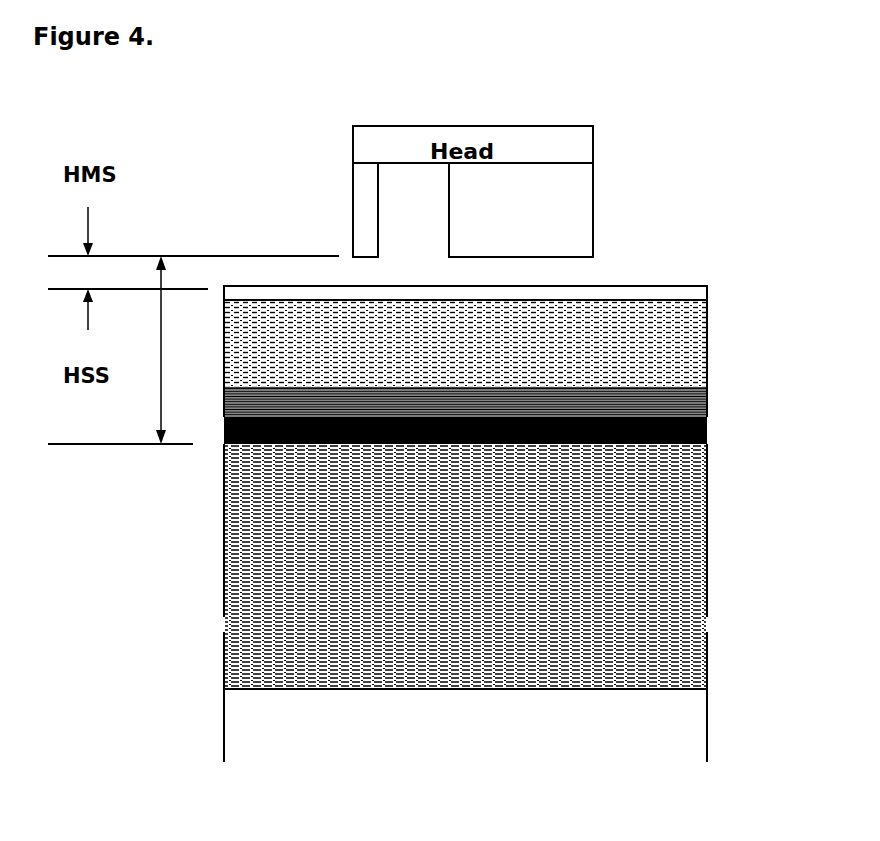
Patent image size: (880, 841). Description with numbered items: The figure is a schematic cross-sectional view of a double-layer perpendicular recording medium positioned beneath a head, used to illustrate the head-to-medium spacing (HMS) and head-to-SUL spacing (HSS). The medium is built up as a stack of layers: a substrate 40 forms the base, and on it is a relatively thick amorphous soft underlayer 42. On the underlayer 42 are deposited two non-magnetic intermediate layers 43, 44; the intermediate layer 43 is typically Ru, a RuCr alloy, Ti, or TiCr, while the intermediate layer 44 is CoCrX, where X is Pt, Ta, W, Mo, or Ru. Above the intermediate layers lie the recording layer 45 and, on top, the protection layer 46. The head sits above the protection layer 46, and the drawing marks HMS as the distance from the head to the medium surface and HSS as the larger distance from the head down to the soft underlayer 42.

The substrate 40 is at (465, 725).
The amorphous soft underlayer 42 is at (465, 566).
The intermediate layer 43 is at (707, 417).
The intermediate layer 44 is at (686, 402).
The recording layer 45 is at (465, 344).
The protection layer 46 is at (722, 289).